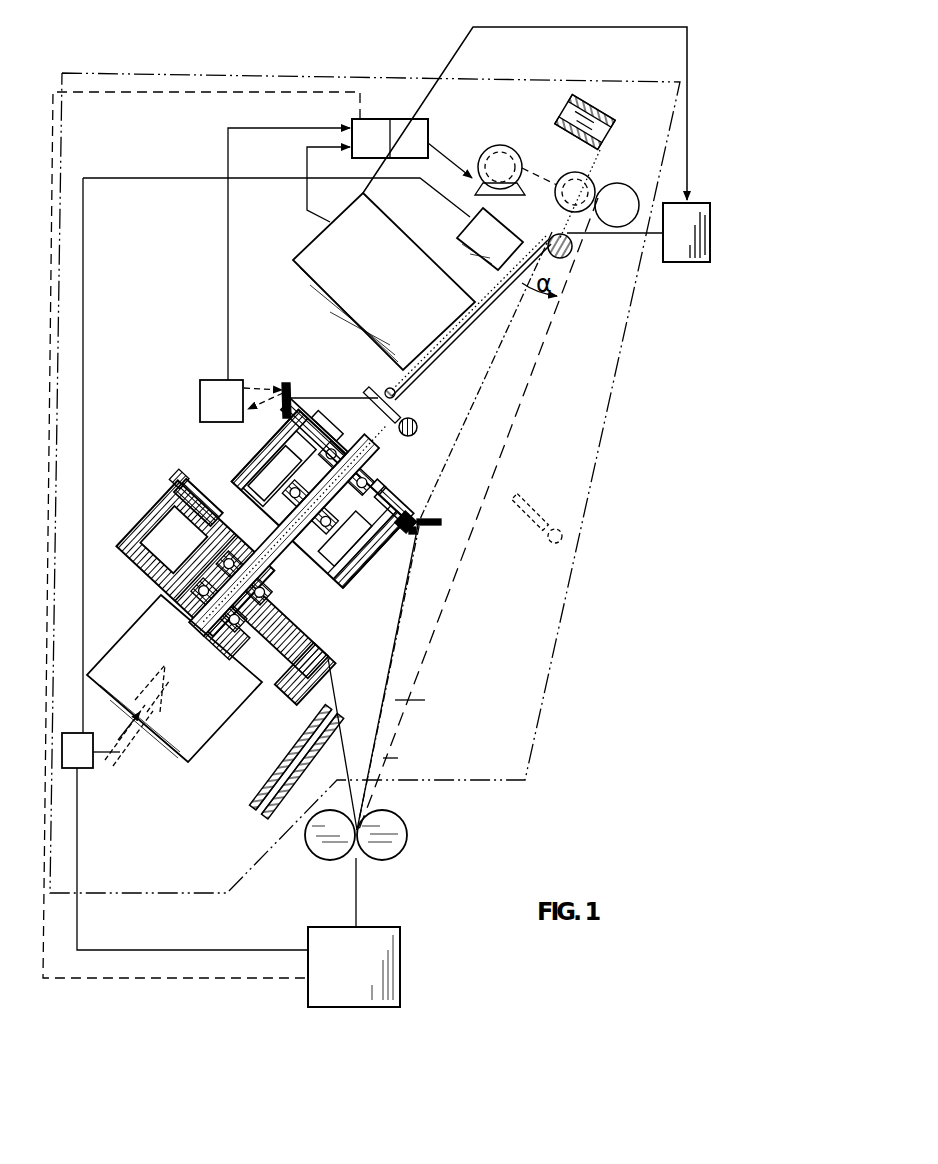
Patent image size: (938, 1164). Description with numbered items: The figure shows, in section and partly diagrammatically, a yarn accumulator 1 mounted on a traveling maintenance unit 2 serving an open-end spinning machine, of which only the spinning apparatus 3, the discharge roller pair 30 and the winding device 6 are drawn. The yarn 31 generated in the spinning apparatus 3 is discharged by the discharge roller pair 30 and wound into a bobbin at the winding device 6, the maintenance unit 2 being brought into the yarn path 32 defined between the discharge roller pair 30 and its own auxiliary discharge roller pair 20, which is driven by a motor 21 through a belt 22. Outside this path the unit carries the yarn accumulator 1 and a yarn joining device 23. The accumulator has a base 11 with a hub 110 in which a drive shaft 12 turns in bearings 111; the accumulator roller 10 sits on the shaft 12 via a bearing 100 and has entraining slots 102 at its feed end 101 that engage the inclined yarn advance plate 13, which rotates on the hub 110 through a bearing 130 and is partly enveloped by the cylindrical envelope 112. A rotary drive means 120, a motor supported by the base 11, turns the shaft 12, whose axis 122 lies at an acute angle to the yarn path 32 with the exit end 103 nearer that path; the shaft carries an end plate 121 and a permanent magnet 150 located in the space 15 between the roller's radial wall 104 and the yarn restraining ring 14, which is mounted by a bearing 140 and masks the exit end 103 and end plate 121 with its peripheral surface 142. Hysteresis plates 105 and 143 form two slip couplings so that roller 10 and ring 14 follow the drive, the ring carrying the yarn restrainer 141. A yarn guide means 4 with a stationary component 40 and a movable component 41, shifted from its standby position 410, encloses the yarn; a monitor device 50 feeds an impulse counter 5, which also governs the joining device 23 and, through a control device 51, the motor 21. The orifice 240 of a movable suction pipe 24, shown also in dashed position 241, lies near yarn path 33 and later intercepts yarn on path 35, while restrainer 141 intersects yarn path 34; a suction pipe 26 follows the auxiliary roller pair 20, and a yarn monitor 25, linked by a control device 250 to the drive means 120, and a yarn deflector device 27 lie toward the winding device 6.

The yarn accumulator 1 is at (190, 448).
The maintenance unit 2 is at (159, 92).
The spinning apparatus 3 is at (378, 972).
The yarn guide means 4 is at (428, 386).
The impulse counter 5 is at (370, 115).
The winding device 6 is at (688, 248).
The accumulator roller 10 is at (258, 478).
The base 11 is at (150, 562).
The drive shaft 12 is at (206, 630).
The yarn advance plate 13 is at (356, 670).
The yarn restraining ring 14 is at (410, 512).
The space 15 is at (283, 432).
The auxiliary discharge roller pair 20 is at (614, 196).
The motor 21 is at (496, 154).
The belt 22 is at (549, 174).
The yarn joining device 23 is at (328, 259).
The suction pipe 24 is at (268, 818).
The yarn monitor 25 is at (468, 230).
The suction pipe 26 is at (594, 107).
The yarn deflector device 27 is at (556, 242).
The discharge roller pair 30 is at (356, 848).
The yarn 31 is at (356, 904).
The yarn path 32 is at (553, 318).
The yarn path 33 is at (400, 757).
The yarn path 34 is at (424, 702).
The yarn path 35 is at (354, 744).
The yarn guide component 40 is at (384, 390).
The yarn guide component 41 is at (410, 408).
The yarn-revolution monitor-device 50 is at (216, 380).
The control device 51 is at (406, 117).
The bearing 100 is at (296, 502).
The feed end 101 is at (340, 600).
The entraining slots 102 is at (190, 514).
The exit end 103 is at (376, 552).
The radial wall 104 is at (326, 534).
The hysteresis plate 105 is at (370, 570).
The hub 110 is at (185, 538).
The bearings 111 is at (190, 612).
The cylindrical envelope 112 is at (180, 490).
The rotary drive means 120 is at (170, 680).
The end plate 121 is at (420, 496).
The axis 122 is at (206, 640).
The bearing 130 is at (290, 626).
The bearing 140 is at (384, 484).
The yarn restrainer 141 is at (442, 522).
The peripheral surface 142 is at (418, 536).
The hysteresis plate 143 is at (290, 400).
The permanent magnet 150 is at (320, 424).
The orifice 240 is at (310, 766).
The position 241 is at (140, 760).
The control device 250 is at (80, 766).
The standby position 410 is at (563, 518).